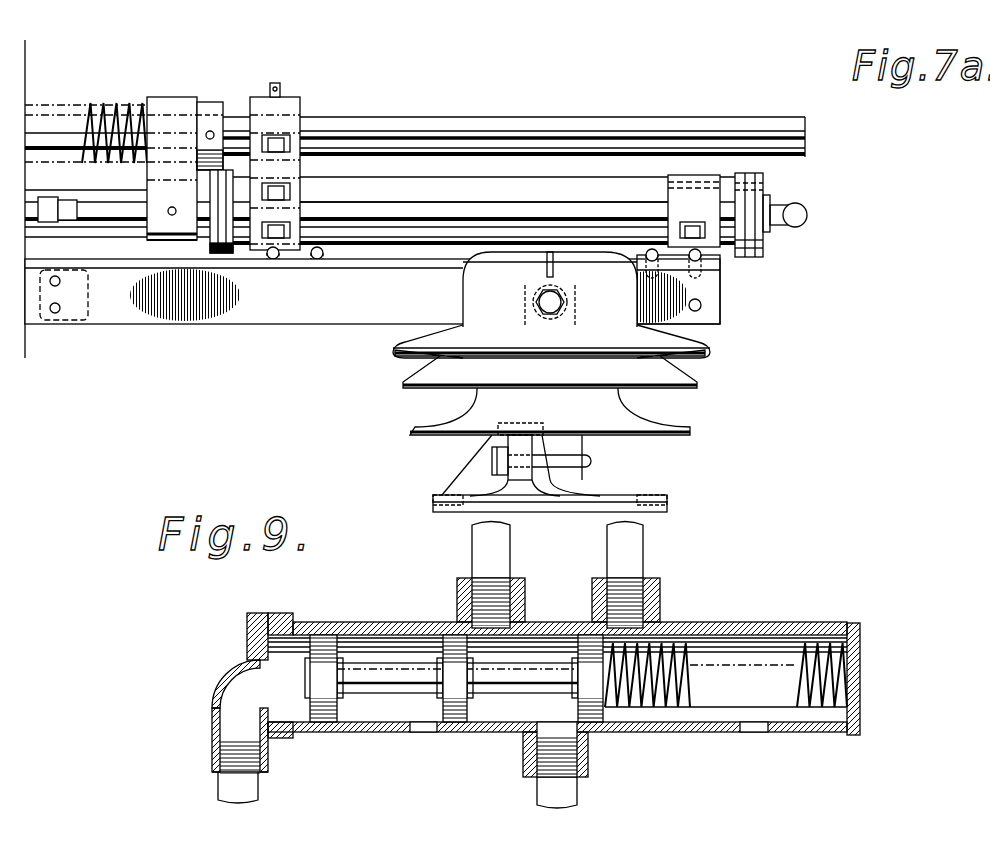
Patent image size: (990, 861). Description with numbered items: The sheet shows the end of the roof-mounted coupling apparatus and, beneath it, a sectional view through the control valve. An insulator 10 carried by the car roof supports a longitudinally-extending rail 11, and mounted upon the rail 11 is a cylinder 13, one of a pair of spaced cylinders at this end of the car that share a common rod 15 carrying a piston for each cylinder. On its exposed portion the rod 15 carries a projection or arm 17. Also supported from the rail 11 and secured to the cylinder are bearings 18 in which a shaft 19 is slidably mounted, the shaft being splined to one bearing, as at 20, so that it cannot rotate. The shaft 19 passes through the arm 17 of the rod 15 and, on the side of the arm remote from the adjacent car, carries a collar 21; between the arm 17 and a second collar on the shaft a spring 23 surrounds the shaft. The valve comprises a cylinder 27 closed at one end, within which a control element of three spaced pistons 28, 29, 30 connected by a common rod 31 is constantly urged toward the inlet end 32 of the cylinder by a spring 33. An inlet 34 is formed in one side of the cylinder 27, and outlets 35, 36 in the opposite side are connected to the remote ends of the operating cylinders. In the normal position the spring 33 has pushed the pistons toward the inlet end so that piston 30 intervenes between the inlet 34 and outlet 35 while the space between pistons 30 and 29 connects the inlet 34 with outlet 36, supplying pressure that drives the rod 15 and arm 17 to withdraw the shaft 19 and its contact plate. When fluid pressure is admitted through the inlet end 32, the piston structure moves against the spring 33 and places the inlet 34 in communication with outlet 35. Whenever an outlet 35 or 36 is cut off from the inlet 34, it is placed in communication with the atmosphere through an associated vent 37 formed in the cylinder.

In FIG. 7A, the insulator 10 is at (570, 417).
In FIG. 7A, the rail 11 is at (390, 305).
In FIG. 7A, the cylinder 13 is at (520, 201).
In FIG. 7A, the rod 15 is at (95, 233).
In FIG. 7A, the arm 17 is at (160, 97).
In FIG. 7A, the bearing 18 is at (300, 105).
In FIG. 7A, the shaft 19 is at (440, 117).
In FIG. 7A, the spline 20 is at (625, 138).
In FIG. 7A, the collar 21 is at (215, 102).
In FIG. 7A, the spring 23 is at (95, 108).
In FIG. 7A, the cylinder 27 is at (88, 320).
In FIG. 9, the cylinder 27 is at (718, 624).
In FIG. 9, the piston 28 is at (322, 648).
In FIG. 9, the piston 29 is at (455, 655).
In FIG. 9, the piston 30 is at (600, 640).
In FIG. 9, the rod 31 is at (513, 679).
In FIG. 9, the inlet end 32 is at (253, 688).
In FIG. 9, the spring 33 is at (840, 683).
In FIG. 9, the inlet 34 is at (563, 786).
In FIG. 7A, the outlet 35 is at (400, 202).
In FIG. 9, the outlet 35 is at (640, 549).
In FIG. 9, the outlet 36 is at (500, 549).
In FIG. 9, the vent 37 is at (425, 733).